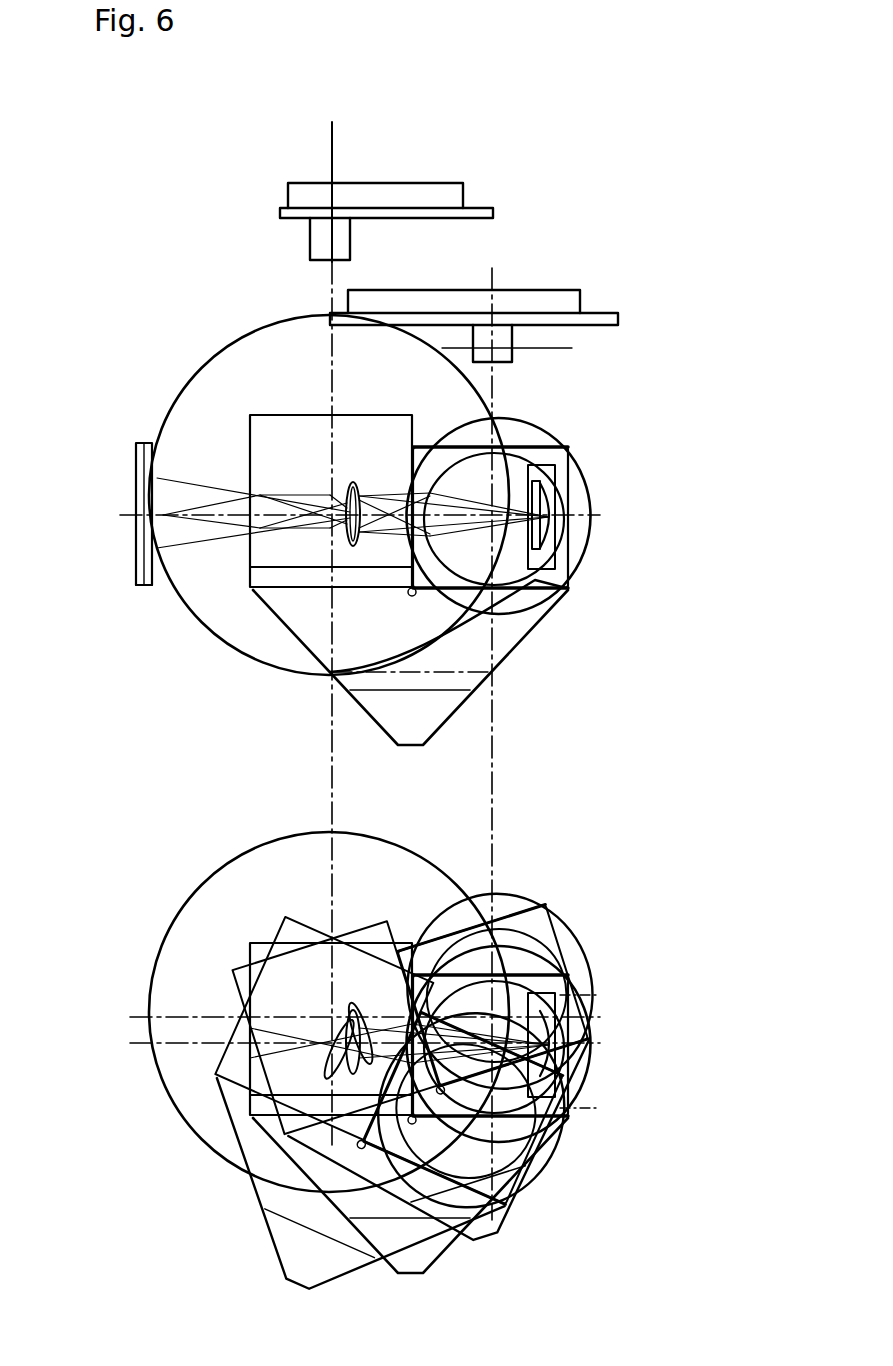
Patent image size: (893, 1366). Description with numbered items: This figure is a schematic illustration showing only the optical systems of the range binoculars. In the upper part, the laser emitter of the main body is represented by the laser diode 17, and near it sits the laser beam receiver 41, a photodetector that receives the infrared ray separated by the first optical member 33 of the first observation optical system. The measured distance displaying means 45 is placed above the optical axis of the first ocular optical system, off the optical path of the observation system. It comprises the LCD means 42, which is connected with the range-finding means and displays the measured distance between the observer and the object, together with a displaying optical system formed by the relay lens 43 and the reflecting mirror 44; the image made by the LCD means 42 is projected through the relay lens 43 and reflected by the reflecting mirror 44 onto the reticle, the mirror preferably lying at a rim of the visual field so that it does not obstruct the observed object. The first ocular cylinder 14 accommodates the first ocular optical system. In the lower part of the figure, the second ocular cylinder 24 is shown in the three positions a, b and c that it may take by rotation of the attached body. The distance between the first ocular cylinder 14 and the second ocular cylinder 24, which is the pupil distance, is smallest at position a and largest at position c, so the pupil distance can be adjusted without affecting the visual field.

The laser diode 17 is at (420, 195).
The laser beam receiver 41 is at (563, 293).
The LCD means 42 is at (143, 440).
The measured distance displaying means 45 is at (135, 598).
The relay lens 43 is at (345, 522).
The first ocular cylinder 14 is at (583, 484).
The reflecting mirror 44 is at (553, 535).
The first optical member 33 is at (522, 662).
The second ocular cylinder 24 is at (573, 1012).
The position a is at (572, 936).
The position b is at (590, 1067).
The position c is at (562, 1162).